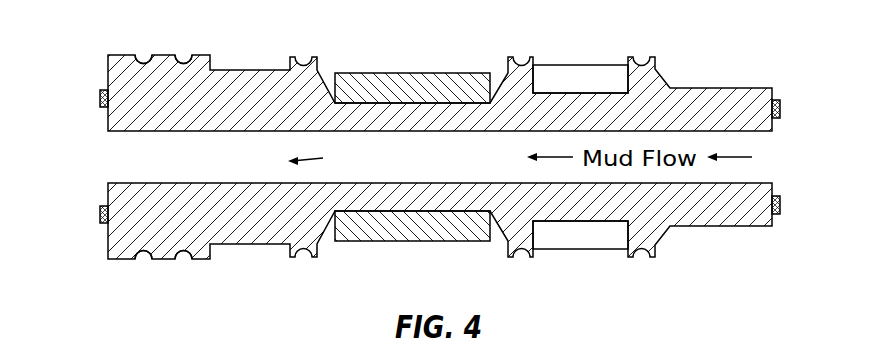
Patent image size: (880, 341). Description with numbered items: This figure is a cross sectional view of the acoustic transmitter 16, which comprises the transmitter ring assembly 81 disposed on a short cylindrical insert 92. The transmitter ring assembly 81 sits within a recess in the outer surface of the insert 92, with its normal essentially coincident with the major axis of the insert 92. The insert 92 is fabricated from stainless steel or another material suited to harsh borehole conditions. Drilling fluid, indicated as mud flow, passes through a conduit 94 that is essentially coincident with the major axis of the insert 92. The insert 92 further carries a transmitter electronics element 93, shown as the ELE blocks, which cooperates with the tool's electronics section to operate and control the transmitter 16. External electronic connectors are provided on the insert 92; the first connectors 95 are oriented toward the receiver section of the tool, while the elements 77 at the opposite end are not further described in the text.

The acoustic transmitter 16 is at (441, 40).
The connector 77 is at (100, 99).
The transmitter ring assembly 81 is at (411, 73).
The short cylindrical insert 92 is at (252, 78).
The transmitter electronics element 93 is at (584, 65).
The conduit 94 is at (320, 160).
The first connectors 95 is at (780, 107).